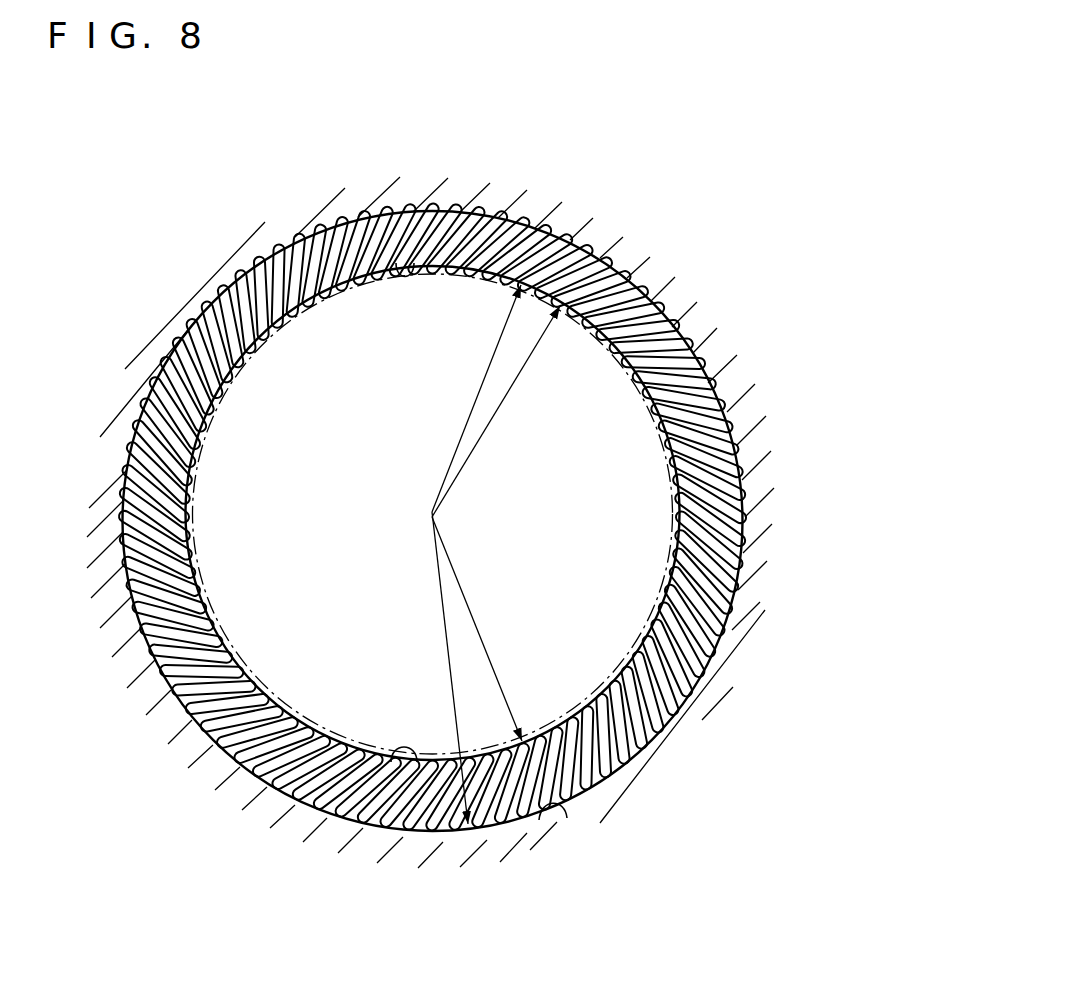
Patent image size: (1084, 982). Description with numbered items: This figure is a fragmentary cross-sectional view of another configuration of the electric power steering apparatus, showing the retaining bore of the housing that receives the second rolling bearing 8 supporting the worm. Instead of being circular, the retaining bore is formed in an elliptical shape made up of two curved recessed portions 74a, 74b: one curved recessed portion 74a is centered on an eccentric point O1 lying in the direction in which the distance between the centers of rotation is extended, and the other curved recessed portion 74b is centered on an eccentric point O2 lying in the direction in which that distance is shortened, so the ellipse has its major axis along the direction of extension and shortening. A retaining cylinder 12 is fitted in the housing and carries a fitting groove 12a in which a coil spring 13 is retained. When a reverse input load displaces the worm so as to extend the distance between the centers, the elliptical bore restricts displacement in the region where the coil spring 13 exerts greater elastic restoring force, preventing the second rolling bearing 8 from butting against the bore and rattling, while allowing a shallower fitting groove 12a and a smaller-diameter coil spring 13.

The second rolling bearing 8 is at (296, 272).
The curved recessed portion 74a is at (405, 262).
The curved recessed portion 74b is at (398, 835).
The retaining cylinder 12 is at (755, 600).
The coil spring 13 is at (668, 697).
The fitting groove 12a is at (537, 823).
The eccentric point O1 is at (392, 470).
The eccentric point O2 is at (392, 527).